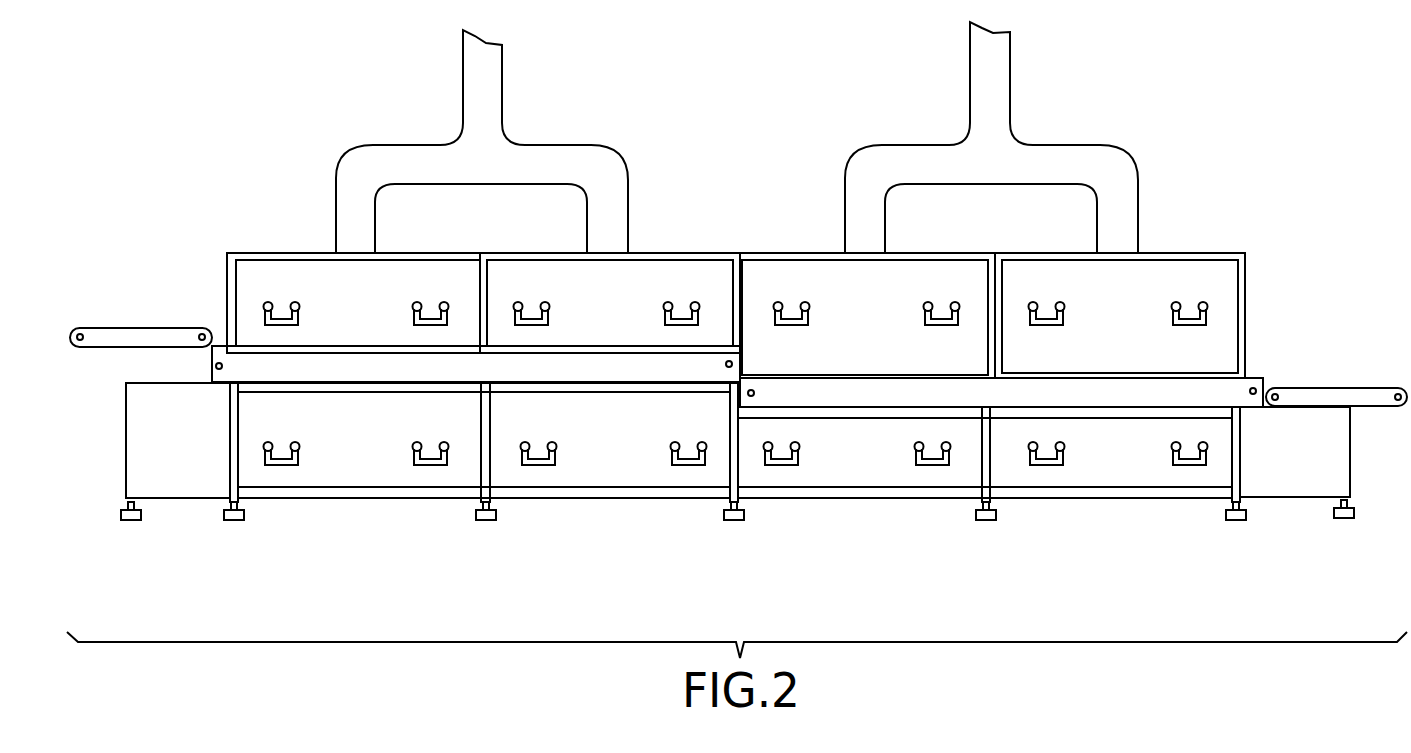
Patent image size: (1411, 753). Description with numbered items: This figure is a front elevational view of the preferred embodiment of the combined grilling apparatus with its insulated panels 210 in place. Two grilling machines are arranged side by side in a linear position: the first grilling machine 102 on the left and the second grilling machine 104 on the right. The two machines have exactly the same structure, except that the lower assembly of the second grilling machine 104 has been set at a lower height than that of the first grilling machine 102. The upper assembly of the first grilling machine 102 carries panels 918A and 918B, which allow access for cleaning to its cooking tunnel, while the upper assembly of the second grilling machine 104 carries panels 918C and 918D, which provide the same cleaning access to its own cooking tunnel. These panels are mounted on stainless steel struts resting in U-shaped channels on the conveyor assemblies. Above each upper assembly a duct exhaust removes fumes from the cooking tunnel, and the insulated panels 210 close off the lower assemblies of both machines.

The first grilling machine 102 is at (461, 321).
The second grilling machine 104 is at (1031, 316).
The insulated panels 210 is at (347, 468).
The panel 918A is at (285, 268).
The panel 918B is at (665, 272).
The panel 918C is at (813, 272).
The panel 918D is at (1203, 270).